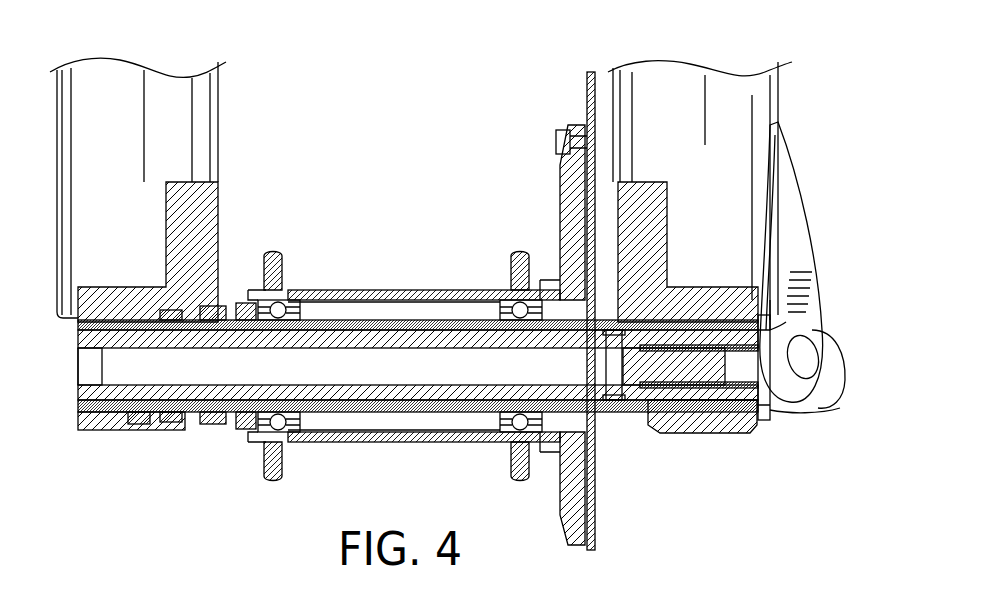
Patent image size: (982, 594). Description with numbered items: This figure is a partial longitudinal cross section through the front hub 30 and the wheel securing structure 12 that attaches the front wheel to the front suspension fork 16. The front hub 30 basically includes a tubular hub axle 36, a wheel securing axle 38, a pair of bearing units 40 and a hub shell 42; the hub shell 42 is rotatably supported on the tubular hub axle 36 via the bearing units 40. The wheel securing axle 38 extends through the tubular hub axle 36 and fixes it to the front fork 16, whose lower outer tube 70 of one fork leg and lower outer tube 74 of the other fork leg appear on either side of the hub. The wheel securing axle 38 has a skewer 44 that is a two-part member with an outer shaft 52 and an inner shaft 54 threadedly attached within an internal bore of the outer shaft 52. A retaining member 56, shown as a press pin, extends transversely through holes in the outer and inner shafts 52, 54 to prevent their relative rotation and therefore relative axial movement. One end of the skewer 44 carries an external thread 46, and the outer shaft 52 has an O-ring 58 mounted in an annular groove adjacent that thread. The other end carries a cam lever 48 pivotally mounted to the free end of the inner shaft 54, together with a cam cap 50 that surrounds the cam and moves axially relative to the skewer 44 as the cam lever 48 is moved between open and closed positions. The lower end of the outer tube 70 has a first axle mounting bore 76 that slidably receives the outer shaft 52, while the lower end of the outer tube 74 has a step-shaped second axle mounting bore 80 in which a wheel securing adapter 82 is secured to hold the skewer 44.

The front suspension fork 16 is at (448, 162).
The lower or outer tube 74 is at (222, 110).
The lower or outer tube 70 is at (782, 97).
The front hub 30 is at (415, 311).
The hub shell 42 is at (396, 288).
The bearing units 40 is at (300, 312).
The wheel securing structure 12 is at (68, 384).
The wheel securing adapter 82 is at (92, 414).
The external thread 46 is at (95, 414).
The O-ring 58 is at (137, 412).
The second axle mounting opening or bore 80 is at (170, 412).
The tubular hub axle 36 is at (212, 412).
The retaining member 56 is at (620, 404).
The skewer 44 is at (690, 440).
The inner shaft 54 is at (655, 380).
The outer shaft 52 is at (703, 404).
The first axle mounting opening or bore 76 is at (762, 422).
The cam lever 48 is at (806, 252).
The cam cap 50 is at (825, 402).
The wheel securing axle 38 is at (838, 418).